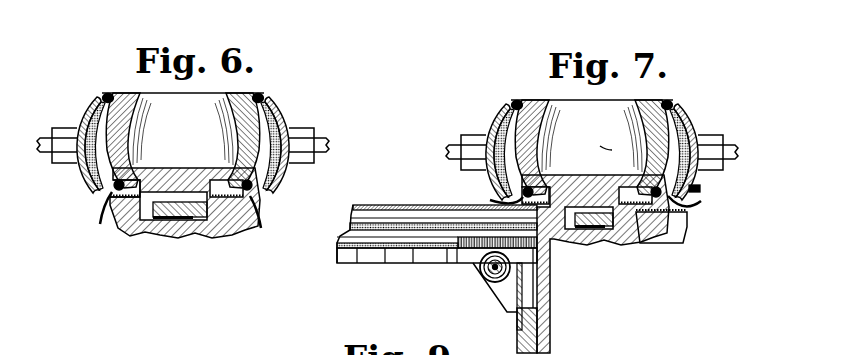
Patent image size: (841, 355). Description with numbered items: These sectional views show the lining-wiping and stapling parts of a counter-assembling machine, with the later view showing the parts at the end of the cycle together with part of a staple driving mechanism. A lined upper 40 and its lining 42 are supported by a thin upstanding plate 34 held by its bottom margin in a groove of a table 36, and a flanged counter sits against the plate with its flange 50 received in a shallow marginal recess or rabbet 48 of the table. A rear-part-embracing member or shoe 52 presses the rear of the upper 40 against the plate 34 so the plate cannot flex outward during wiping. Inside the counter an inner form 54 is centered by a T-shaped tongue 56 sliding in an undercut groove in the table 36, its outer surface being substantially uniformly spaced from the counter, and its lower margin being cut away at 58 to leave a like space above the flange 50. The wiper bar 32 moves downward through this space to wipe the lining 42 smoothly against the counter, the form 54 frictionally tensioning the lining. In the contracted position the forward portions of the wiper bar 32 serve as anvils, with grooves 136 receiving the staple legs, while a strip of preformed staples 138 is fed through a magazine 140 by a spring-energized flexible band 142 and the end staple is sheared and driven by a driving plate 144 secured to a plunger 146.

In FIG. 6, the wiper bar 32 is at (127, 173).
In FIG. 7, the wiper bar 32 is at (547, 167).
In FIG. 6, the upstanding plate 34 is at (109, 206).
In FIG. 7, the upstanding plate 34 is at (491, 199).
In FIG. 6, the table 36 is at (167, 236).
In FIG. 7, the table 36 is at (628, 247).
In FIG. 6, the upper 40 is at (106, 95).
In FIG. 7, the upper 40 is at (517, 102).
In FIG. 6, the lining 42 is at (111, 95).
In FIG. 7, the lining 42 is at (523, 102).
In FIG. 6, the marginal recess or rabbet 48 is at (229, 181).
In FIG. 7, the marginal recess or rabbet 48 is at (590, 167).
In FIG. 6, the flange of the counter 50 is at (243, 183).
In FIG. 7, the flange of the counter 50 is at (645, 196).
In FIG. 6, the rear-part-embracing member or shoe 52 is at (84, 111).
In FIG. 7, the rear-part-embracing member or shoe 52 is at (497, 119).
In FIG. 6, the inner form 54 is at (183, 129).
In FIG. 7, the inner form 54 is at (592, 136).
In FIG. 6, the T-shaped tongue 56 is at (196, 236).
In FIG. 7, the T-shaped tongue 56 is at (596, 235).
In FIG. 6, the cut-away portion 58 is at (143, 191).
In FIG. 7, the cut-away portion 58 is at (642, 207).
In FIG. 7, the grooves 136 is at (603, 148).
In FIG. 7, the strip of preformed staples 138 is at (430, 241).
In FIG. 7, the magazine 140 is at (382, 231).
In FIG. 7, the spring-energized flexible band 142 is at (428, 264).
In FIG. 7, the driving plate 144 is at (533, 285).
In FIG. 7, the plunger 146 is at (521, 348).